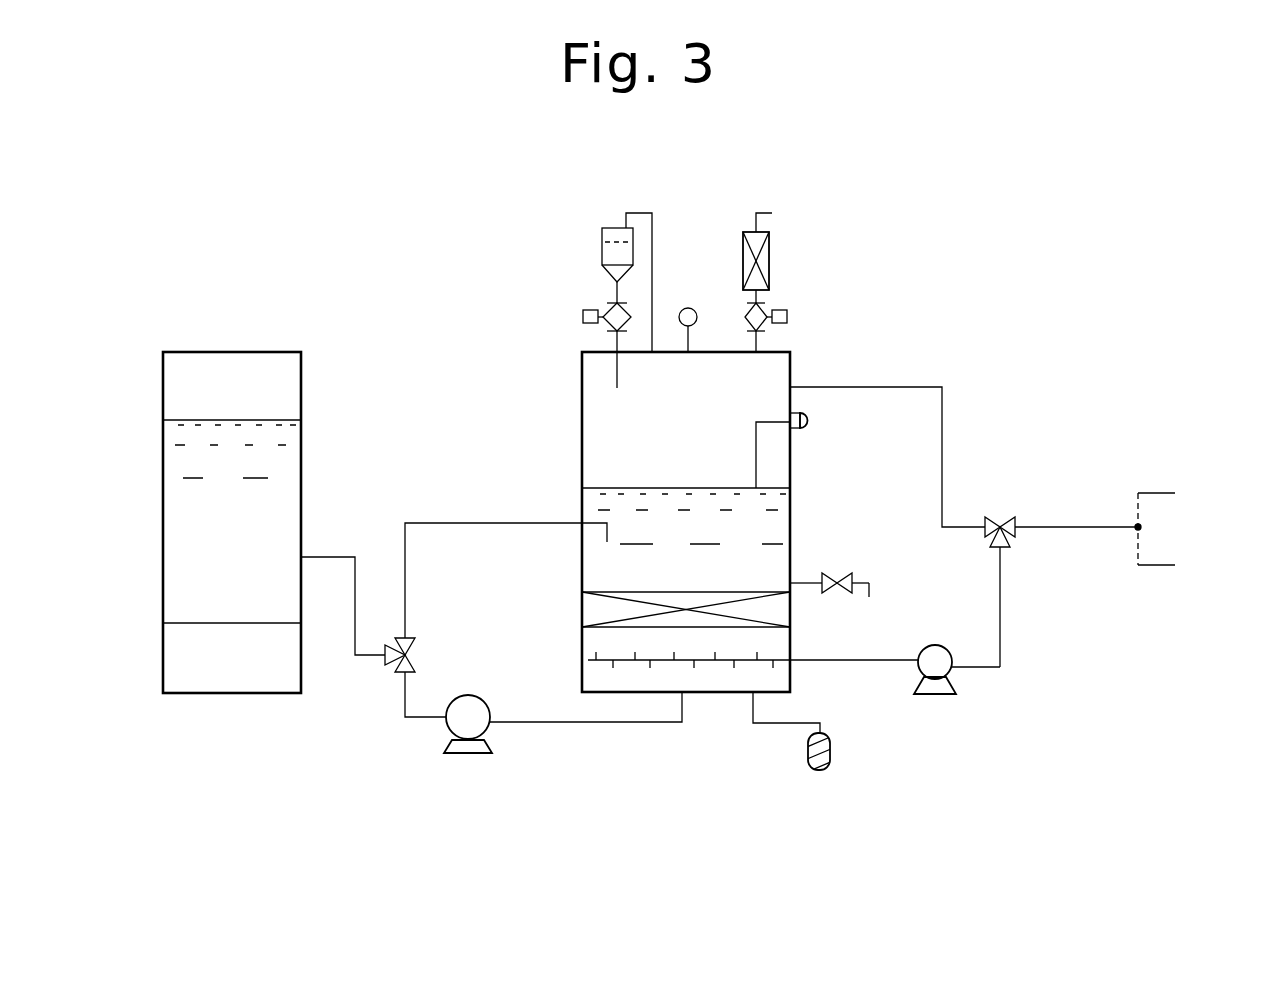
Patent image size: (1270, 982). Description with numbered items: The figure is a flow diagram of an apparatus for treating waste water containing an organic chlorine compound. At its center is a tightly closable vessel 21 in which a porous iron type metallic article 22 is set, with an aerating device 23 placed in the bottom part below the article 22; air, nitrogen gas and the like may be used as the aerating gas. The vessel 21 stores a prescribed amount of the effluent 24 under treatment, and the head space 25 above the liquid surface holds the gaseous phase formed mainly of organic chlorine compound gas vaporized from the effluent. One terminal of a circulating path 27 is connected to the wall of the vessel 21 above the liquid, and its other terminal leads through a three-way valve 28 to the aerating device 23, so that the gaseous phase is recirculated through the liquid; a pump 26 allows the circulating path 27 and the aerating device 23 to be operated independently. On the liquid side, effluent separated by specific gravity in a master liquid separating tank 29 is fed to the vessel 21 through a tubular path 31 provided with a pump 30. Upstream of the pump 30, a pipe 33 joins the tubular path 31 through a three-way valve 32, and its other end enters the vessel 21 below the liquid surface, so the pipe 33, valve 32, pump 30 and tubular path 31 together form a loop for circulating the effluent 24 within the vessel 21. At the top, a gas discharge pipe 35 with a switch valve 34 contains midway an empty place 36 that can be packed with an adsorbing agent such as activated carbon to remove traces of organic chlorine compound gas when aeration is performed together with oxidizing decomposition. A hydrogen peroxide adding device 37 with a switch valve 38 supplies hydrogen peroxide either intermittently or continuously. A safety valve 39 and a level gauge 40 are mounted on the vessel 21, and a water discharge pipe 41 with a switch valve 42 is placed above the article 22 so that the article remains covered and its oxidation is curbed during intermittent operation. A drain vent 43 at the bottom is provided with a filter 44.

The tightly closable vessel 21 is at (582, 395).
The porous iron type metallic article 22 is at (790, 615).
The aerating device 23 is at (775, 660).
The effluent under treatment 24 is at (790, 515).
The head space 25 is at (590, 455).
The pump 26 is at (943, 646).
The circulating path 27 is at (942, 408).
The three-way valve 28 is at (1000, 517).
The master liquid separating tank 29 is at (163, 480).
The pump 30 is at (482, 698).
The tubular path 31 is at (355, 620).
The three-way valve 32 is at (413, 646).
The pipe 33 is at (450, 523).
The switch valve 34 is at (787, 312).
The gas discharge pipe 35 is at (772, 213).
The empty place 36 is at (770, 252).
The hydrogen peroxide adding device 37 is at (645, 213).
The switch valve 38 is at (583, 316).
The safety valve 39 is at (688, 308).
The level gauge 40 is at (813, 420).
The water discharge pipe 41 is at (866, 585).
The switch valve 42 is at (830, 573).
The drain vent 43 is at (765, 725).
The filter 44 is at (832, 752).